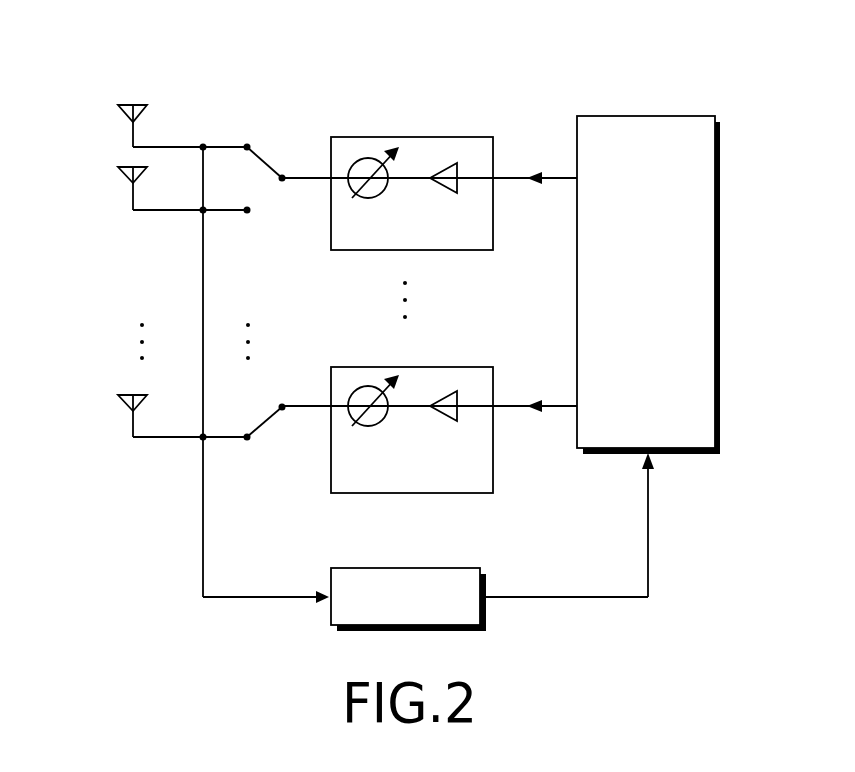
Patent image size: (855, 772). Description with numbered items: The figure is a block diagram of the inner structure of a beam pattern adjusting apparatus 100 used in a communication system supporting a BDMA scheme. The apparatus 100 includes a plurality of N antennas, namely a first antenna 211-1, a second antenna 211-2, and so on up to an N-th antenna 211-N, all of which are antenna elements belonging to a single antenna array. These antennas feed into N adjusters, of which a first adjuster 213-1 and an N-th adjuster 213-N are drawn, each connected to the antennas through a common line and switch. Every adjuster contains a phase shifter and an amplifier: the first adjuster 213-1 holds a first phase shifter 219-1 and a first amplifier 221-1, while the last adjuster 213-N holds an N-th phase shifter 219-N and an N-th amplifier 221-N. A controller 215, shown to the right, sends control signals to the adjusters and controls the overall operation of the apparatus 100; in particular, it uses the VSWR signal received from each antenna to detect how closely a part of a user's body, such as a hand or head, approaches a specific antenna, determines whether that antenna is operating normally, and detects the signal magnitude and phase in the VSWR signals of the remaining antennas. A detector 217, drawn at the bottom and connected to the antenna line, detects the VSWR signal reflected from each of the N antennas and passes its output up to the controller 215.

The beam pattern adjusting apparatus 100 is at (721, 45).
The antenna#1 211-1 is at (118, 112).
The antenna#2 211-2 is at (118, 176).
The antenna#N 211-N is at (118, 401).
The adjuster#1 213-1 is at (453, 137).
The adjuster#N 213-N is at (463, 366).
The controller 215 is at (645, 116).
The detector 217 is at (410, 568).
The phase shifter#1 219-1 is at (368, 199).
The phase shifter#N 219-N is at (368, 427).
The amplifier#1 221-1 is at (440, 195).
The amplifier#N 221-N is at (440, 423).